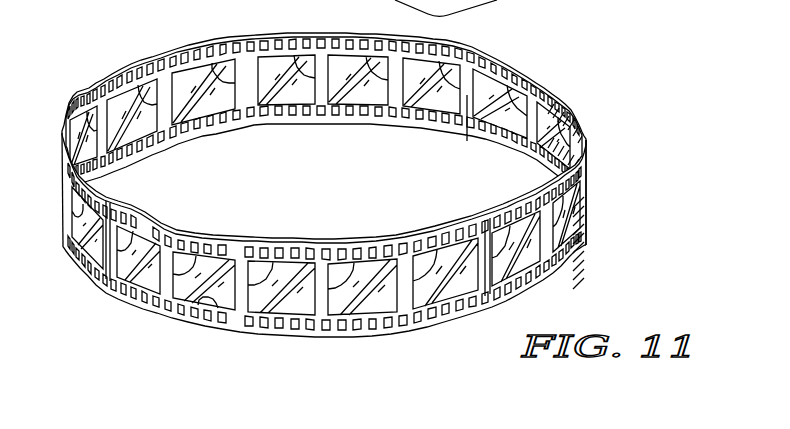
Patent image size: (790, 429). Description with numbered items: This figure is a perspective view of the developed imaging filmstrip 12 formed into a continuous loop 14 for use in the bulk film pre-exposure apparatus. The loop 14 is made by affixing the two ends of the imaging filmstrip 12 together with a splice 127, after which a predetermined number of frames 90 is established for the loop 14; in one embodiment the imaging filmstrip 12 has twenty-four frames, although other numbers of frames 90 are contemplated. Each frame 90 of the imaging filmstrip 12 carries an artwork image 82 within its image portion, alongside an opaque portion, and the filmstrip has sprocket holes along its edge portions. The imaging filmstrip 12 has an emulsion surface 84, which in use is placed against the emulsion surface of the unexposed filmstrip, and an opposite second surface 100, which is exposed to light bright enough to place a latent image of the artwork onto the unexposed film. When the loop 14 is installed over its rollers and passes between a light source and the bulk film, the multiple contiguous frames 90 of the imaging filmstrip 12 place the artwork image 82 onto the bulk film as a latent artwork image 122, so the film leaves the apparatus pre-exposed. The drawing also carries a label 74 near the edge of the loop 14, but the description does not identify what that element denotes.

The imaging filmstrip 12 is at (535, 42).
The continuous loop 14 is at (381, 187).
The strip end edge 74 is at (577, 96).
The artwork image 82 is at (180, 258).
The emulsion surface 84 is at (500, 78).
The frame 90 is at (123, 262).
The second surface 100 is at (138, 228).
The latent artwork image 122 is at (199, 304).
The splice 127 is at (602, 243).